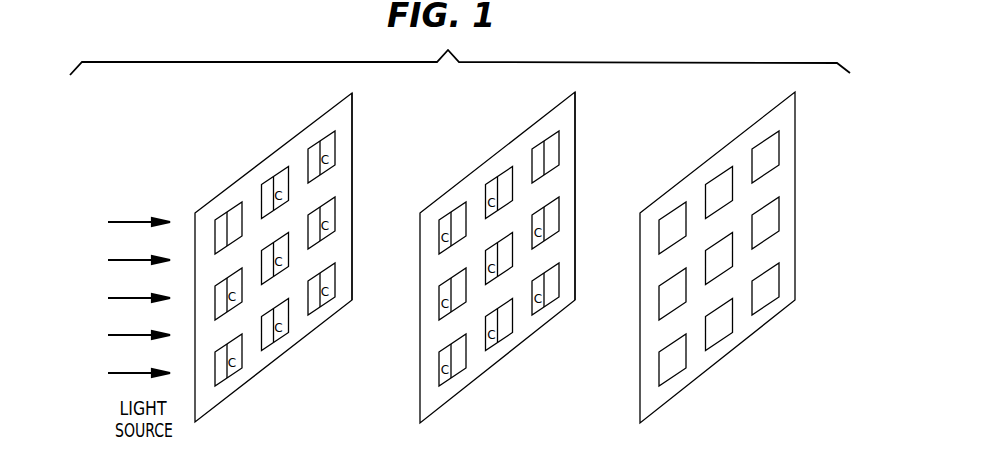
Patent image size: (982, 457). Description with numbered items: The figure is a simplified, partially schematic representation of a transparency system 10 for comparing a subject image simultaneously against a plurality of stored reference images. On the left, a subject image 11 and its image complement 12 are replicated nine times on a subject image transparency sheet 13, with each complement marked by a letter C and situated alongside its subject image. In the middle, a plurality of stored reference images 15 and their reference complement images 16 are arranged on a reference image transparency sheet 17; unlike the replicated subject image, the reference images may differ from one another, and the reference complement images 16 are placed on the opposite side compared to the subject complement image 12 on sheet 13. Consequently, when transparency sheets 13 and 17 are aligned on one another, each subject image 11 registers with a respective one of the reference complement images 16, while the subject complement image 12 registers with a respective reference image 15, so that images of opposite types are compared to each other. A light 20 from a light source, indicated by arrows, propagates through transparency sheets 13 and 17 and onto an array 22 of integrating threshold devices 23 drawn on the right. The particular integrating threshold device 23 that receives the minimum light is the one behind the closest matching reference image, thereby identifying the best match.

The transparency system 10 is at (254, 447).
The subject image 11 is at (218, 225).
The image complement 12 is at (233, 208).
The subject image transparency sheet 13 is at (352, 127).
The stored reference images 15 is at (557, 138).
The reference complement images 16 is at (533, 150).
The reference image transparency sheet 17 is at (565, 212).
The light 20 is at (110, 298).
The array 22 is at (673, 397).
The integrating threshold devices 23 is at (717, 330).